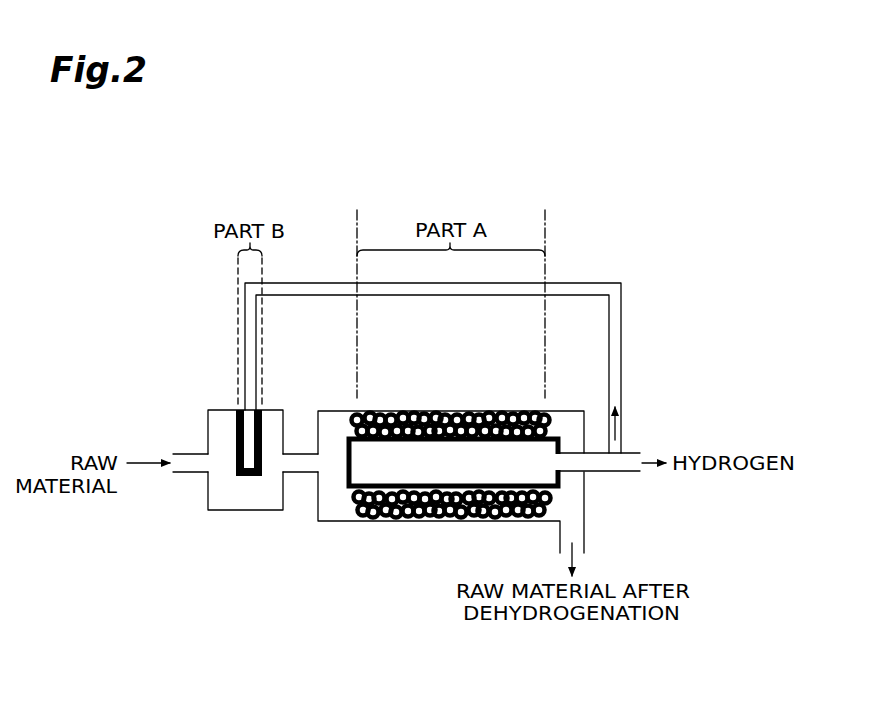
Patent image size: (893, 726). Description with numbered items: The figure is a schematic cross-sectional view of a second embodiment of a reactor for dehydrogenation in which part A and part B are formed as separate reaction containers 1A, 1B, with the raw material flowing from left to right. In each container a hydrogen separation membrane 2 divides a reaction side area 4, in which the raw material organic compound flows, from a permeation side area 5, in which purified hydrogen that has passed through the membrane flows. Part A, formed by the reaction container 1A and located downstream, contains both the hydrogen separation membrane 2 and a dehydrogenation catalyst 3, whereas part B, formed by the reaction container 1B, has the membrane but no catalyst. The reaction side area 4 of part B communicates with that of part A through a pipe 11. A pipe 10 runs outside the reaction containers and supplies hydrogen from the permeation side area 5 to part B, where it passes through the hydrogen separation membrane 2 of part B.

The reaction container 1A is at (333, 522).
The reaction container 1B is at (223, 511).
The hydrogen separation membrane 2 is at (347, 481).
The dehydrogenation catalyst 3 is at (400, 521).
The reaction side area 4 is at (272, 420).
The permeation side area 5 is at (472, 470).
The pipe 10 is at (622, 322).
The pipe 11 is at (298, 452).